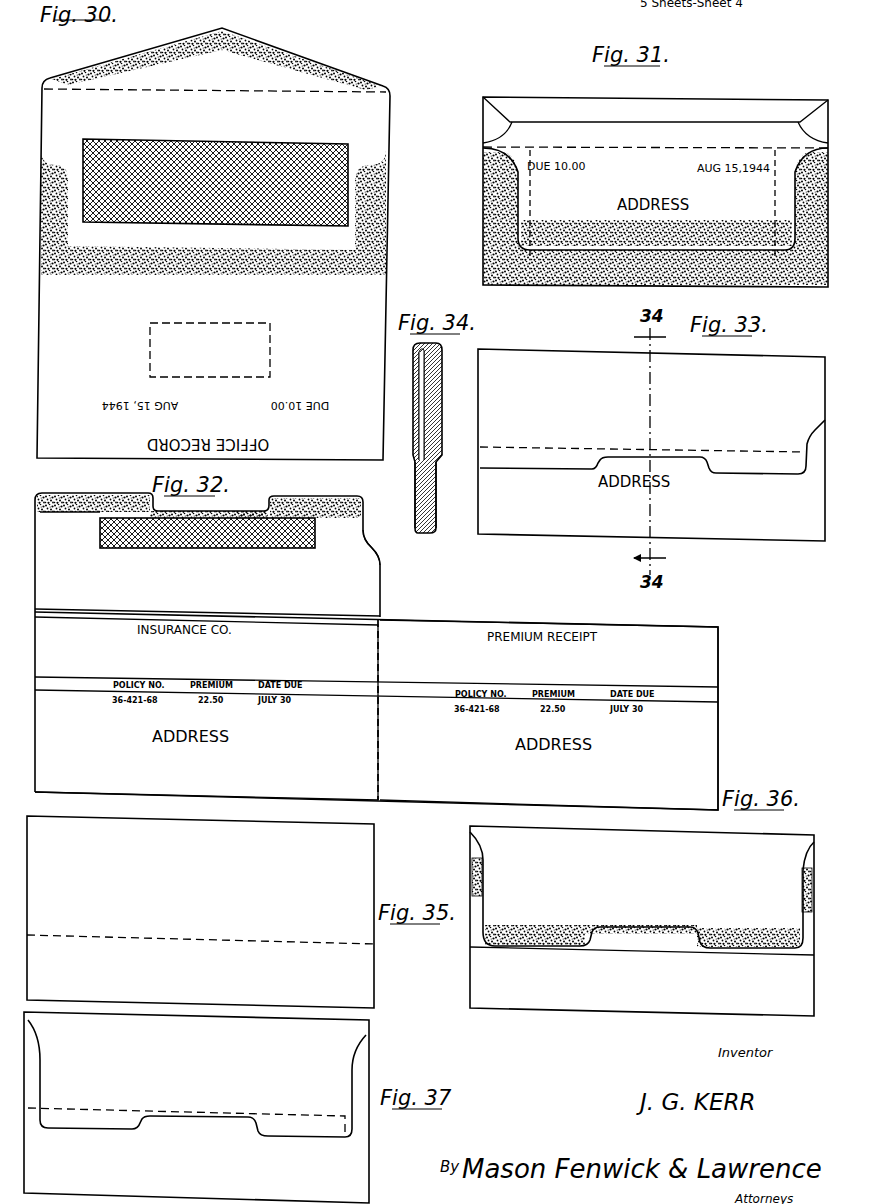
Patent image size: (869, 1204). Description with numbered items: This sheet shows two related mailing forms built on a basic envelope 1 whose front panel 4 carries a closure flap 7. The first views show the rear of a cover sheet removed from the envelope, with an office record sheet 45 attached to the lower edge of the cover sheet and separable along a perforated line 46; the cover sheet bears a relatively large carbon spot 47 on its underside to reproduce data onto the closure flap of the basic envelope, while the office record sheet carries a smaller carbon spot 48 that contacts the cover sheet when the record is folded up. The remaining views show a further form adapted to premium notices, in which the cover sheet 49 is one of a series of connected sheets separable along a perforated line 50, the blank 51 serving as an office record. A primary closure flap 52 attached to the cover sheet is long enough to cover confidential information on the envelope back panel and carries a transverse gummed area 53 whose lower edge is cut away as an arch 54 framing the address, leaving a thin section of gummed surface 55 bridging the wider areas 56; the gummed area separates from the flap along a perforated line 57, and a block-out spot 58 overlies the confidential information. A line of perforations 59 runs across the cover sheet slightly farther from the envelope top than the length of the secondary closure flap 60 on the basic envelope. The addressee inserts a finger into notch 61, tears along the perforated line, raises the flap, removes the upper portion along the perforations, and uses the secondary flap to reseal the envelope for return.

In FIG. 31, the basic envelope 1 is at (566, 282).
In FIG. 31, the front panel 4 is at (513, 200).
In FIG. 31, the closure flap 7 is at (537, 178).
In FIG. 30, the office record sheet 45 is at (365, 328).
In FIG. 30, the perforated line 46 is at (340, 284).
In FIG. 30, the carbon spot 47 is at (348, 160).
In FIG. 30, the carbon spot 48 is at (272, 360).
In FIG. 32, the cover sheet 49 is at (212, 785).
In FIG. 35, the cover sheet 49 is at (352, 878).
In FIG. 32, the perforated line 50 is at (380, 640).
In FIG. 32, the blank 51 is at (665, 633).
In FIG. 32, the primary closure flap 52 is at (372, 584).
In FIG. 33, the primary closure flap 52 is at (760, 366).
In FIG. 34, the primary closure flap 52 is at (420, 420).
In FIG. 32, the gummed area 53 is at (336, 498).
In FIG. 32, the arch 54 is at (238, 510).
In FIG. 33, the arch 54 is at (666, 458).
In FIG. 32, the thin section of gummed surface 55 is at (162, 510).
In FIG. 32, the wider gummed areas 56 is at (103, 500).
In FIG. 33, the wider gummed areas 56 is at (553, 471).
In FIG. 32, the perforated line 57 is at (86, 513).
In FIG. 33, the perforated line 57 is at (525, 449).
In FIG. 32, the block-out spot 58 is at (222, 542).
In FIG. 34, the line of perforations 59 is at (437, 479).
In FIG. 35, the line of perforations 59 is at (152, 940).
In FIG. 36, the line of perforations 59 is at (612, 951).
In FIG. 34, the secondary closure flap 60 is at (442, 405).
In FIG. 36, the secondary closure flap 60 is at (510, 898).
In FIG. 37, the secondary closure flap 60 is at (345, 1076).
In FIG. 32, the notch 61 is at (369, 556).
In FIG. 33, the notch 61 is at (806, 444).